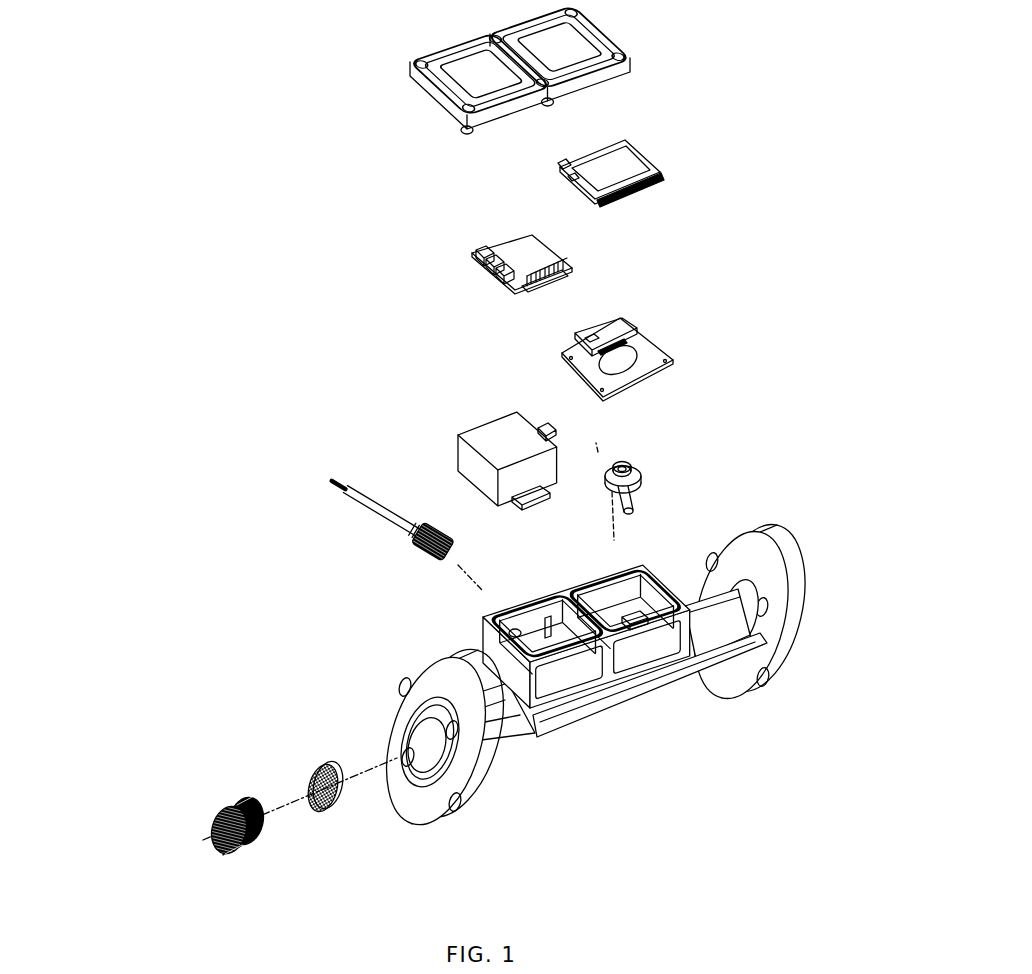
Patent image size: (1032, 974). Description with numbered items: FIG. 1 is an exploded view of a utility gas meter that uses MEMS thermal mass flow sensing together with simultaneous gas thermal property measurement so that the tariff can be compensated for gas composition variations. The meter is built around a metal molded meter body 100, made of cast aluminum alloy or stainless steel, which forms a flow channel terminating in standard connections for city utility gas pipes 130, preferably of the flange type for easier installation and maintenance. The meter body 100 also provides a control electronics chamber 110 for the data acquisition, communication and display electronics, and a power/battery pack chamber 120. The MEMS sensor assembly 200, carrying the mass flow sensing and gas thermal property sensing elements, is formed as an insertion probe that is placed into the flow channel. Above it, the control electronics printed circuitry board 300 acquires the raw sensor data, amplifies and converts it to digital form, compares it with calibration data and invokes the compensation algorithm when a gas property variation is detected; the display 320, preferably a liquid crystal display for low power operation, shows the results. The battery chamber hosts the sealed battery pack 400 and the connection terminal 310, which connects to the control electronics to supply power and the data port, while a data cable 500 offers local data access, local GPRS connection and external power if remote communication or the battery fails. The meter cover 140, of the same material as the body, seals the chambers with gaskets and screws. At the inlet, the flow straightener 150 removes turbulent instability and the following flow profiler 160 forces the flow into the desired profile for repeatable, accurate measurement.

The meter body 100 is at (642, 687).
The control electronics chamber 110 is at (683, 660).
The power/battery pack chamber 120 is at (545, 731).
The city utility gas pipes connection 130 is at (634, 675).
The meter cover 140 is at (640, 48).
The flow straightener 150 is at (235, 800).
The flow profiler 160 is at (318, 768).
The MEMS sensor assembly 200 is at (641, 478).
The control electronics printed circuitry board 300 is at (662, 345).
The connection terminal 310 is at (572, 275).
The display 320 is at (655, 170).
The sealed battery pack 400 is at (492, 430).
The data cable 500 is at (368, 511).